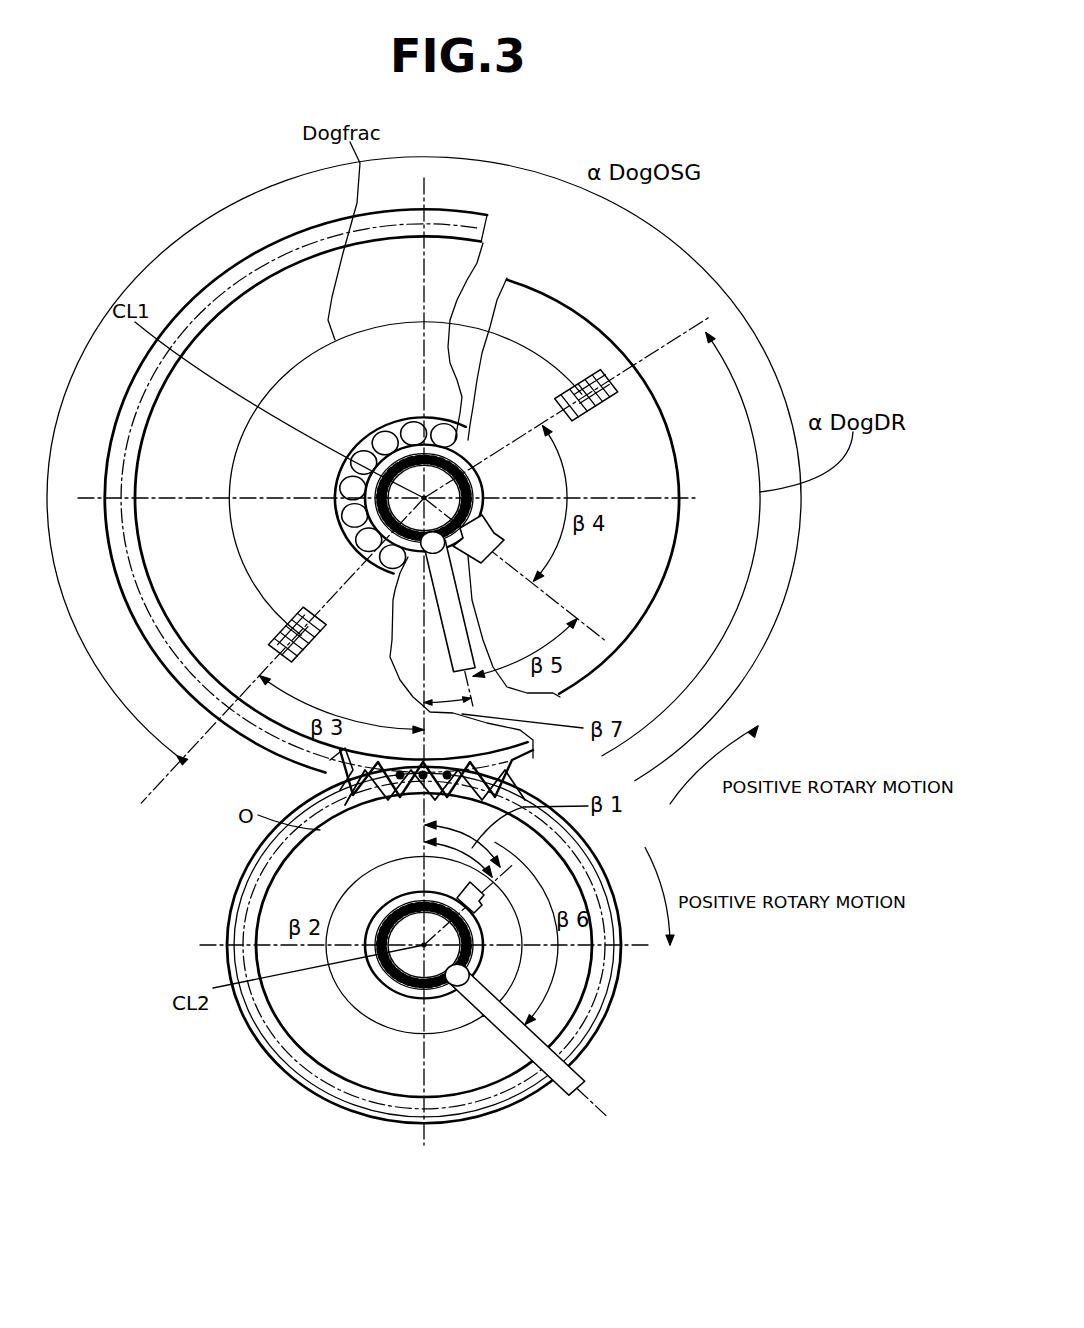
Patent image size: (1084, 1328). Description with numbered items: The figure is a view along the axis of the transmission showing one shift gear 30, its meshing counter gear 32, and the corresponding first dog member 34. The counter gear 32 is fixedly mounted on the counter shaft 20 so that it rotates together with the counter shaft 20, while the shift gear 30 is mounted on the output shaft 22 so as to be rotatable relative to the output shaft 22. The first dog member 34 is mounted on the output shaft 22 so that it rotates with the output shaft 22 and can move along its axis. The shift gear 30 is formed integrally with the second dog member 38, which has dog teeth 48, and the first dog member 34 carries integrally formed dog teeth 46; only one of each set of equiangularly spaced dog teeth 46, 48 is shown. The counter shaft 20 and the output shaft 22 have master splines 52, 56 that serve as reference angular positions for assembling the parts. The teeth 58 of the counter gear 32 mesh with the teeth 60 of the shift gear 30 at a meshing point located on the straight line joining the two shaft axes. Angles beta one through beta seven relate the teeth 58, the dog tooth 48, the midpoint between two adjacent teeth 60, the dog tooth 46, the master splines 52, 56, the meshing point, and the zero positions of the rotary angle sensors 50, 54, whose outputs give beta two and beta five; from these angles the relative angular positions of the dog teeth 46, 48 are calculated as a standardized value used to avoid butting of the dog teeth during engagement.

The counter shaft 20 is at (410, 960).
The output shaft 22 is at (345, 480).
The shift gear 30 is at (200, 283).
The counter gear 32 is at (300, 1023).
The first dog member 34 is at (647, 450).
The second dog member 38 is at (316, 472).
The dog teeth 46 is at (580, 393).
The dog teeth 48 is at (267, 640).
The rotary angle sensor 50 is at (568, 1098).
The master spline 52 is at (485, 912).
The rotary angle sensor 54 is at (470, 598).
The master spline 56 is at (523, 533).
The teeth 58 is at (477, 805).
The teeth 60 is at (353, 770).